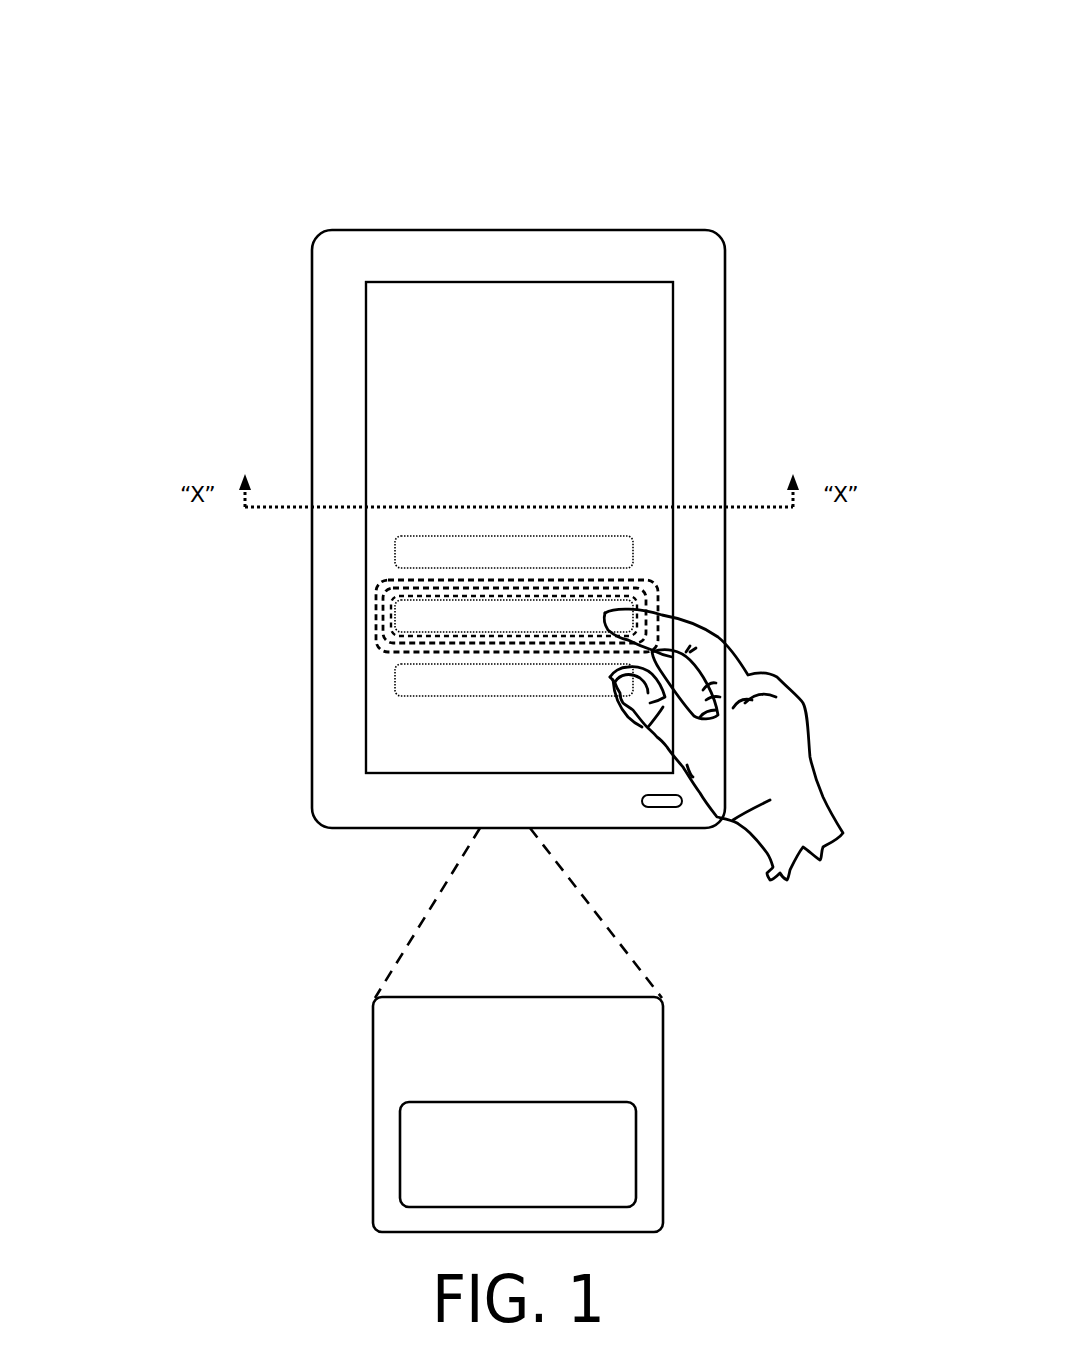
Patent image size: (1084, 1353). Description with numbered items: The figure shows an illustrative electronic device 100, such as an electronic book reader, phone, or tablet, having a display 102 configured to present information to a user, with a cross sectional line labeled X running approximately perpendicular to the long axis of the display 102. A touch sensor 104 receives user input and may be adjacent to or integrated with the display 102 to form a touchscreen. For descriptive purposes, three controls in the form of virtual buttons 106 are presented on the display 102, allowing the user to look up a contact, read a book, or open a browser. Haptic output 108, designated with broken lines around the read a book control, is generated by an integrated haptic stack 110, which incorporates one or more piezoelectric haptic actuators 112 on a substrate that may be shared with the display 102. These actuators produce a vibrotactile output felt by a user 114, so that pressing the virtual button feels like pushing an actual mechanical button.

The electronic device 100 is at (691, 63).
The display 102 is at (415, 282).
The touch sensor 104 is at (522, 323).
The virtual buttons 106 is at (397, 543).
The haptic output 108 is at (377, 620).
The integrated haptic stack 110 is at (535, 1081).
The piezoelectric haptic actuators 112 is at (569, 1187).
The user 114 is at (723, 775).